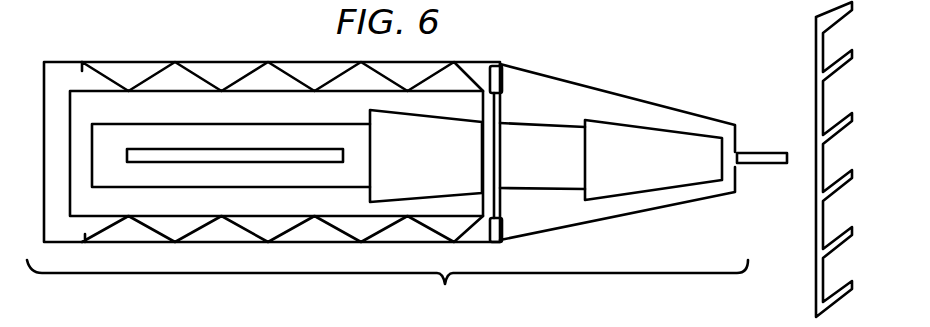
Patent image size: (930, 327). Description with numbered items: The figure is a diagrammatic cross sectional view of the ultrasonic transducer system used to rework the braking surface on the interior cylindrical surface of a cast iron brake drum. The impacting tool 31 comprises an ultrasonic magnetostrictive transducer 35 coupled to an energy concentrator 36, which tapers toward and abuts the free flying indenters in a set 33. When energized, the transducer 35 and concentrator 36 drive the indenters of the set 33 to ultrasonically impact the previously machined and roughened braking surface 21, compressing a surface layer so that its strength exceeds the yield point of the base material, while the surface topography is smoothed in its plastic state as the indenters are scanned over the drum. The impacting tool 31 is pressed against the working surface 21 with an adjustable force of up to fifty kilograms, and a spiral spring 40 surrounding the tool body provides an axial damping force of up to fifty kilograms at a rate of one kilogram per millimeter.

The braking surface 21 is at (816, 43).
The impacting tool 31 is at (387, 190).
The set of free flying indenters 33 is at (759, 152).
The ultrasonic magnetostrictive transducer 35 is at (428, 162).
The energy concentrator 36 is at (553, 170).
The spiral spring 40 is at (155, 73).